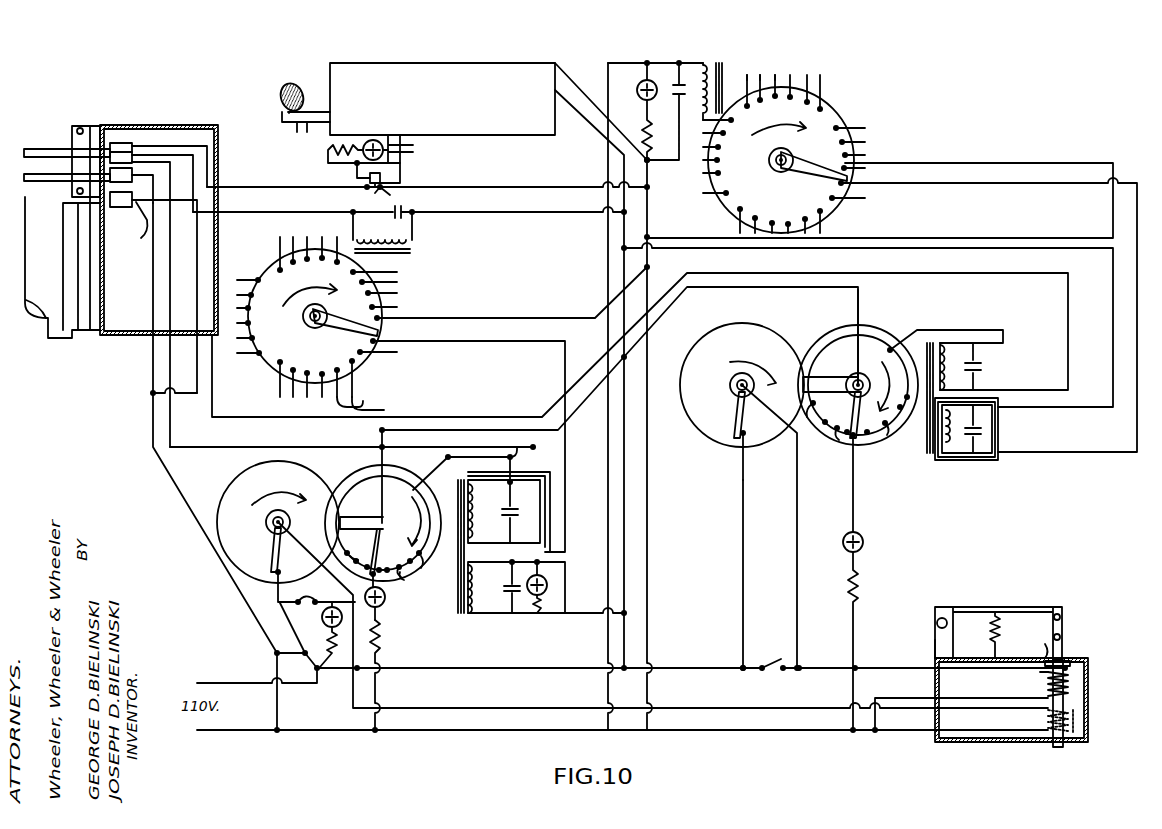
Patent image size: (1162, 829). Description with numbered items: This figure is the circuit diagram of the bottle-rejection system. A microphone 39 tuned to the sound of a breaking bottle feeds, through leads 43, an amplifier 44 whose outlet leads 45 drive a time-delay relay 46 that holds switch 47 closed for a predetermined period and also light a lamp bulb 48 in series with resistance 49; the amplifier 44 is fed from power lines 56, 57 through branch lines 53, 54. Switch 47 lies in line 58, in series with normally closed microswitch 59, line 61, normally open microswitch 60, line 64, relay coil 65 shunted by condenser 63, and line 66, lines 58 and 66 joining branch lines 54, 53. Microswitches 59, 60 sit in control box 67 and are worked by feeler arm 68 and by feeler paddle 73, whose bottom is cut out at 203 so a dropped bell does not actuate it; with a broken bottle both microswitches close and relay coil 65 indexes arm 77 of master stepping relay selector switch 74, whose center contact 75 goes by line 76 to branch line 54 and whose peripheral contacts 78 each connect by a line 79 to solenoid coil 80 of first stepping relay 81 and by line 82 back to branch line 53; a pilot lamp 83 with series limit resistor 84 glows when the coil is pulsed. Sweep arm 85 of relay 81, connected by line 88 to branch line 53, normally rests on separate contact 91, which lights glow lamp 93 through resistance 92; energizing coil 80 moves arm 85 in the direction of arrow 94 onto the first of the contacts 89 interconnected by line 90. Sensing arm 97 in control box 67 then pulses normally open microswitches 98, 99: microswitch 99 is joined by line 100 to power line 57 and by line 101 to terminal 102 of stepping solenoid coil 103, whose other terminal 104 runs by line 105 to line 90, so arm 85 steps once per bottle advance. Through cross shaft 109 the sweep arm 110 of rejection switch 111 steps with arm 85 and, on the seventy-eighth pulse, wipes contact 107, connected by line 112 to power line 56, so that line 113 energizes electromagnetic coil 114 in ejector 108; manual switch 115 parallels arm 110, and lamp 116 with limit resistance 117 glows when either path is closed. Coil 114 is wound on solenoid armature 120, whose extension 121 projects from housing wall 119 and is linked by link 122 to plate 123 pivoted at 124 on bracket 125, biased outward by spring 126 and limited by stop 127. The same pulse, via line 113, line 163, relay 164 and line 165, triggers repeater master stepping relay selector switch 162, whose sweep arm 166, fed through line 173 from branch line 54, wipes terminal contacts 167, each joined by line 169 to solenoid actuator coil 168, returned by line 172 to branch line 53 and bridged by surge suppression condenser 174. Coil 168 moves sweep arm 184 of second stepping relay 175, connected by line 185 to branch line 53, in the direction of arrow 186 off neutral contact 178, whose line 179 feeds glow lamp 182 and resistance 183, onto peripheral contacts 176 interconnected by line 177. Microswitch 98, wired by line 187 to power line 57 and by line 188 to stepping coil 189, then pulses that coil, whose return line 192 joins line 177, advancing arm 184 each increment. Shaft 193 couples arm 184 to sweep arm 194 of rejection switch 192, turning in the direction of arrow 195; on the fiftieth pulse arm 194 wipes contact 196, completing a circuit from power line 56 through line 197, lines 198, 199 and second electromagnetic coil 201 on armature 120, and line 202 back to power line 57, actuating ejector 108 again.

The microphone 39 is at (278, 90).
The leads 43 is at (306, 130).
The amplifier 44 is at (428, 70).
The outlet leads 45 is at (413, 145).
The relay 46 is at (355, 184).
The switch 47 is at (388, 192).
The lamp bulb 48 is at (375, 140).
The resistance 49 is at (339, 145).
The branch power line 53 is at (580, 110).
The branch power line 54 is at (570, 65).
The power line 56 is at (232, 680).
The power line 57 is at (252, 727).
The line 58 is at (555, 187).
The microswitch 59 is at (120, 183).
The microswitch 60 is at (124, 208).
The line 61 is at (140, 231).
The condenser 63 is at (415, 211).
The line 64 is at (277, 210).
The relay coil 65 is at (418, 232).
The line 66 is at (530, 213).
The control box 67 is at (180, 126).
The feeler arm 68 is at (38, 163).
The feeler paddle 73 is at (18, 240).
The master stepping relay selector switch 74 is at (366, 366).
The center contact 75 is at (326, 306).
The line 76 is at (444, 318).
The switch contact arm 77 is at (340, 326).
The contacts 78 is at (368, 352).
The line 79 is at (466, 341).
The solenoid coil 80 is at (476, 622).
The first stepping relay 81 is at (410, 582).
The line 82 is at (520, 618).
The pilot lamp 83 is at (550, 581).
The series limit resistor 84 is at (546, 599).
The sweep arm 85 is at (364, 555).
The line 88 is at (382, 470).
The contacts 89 is at (406, 566).
The line 90 is at (424, 564).
The contact 91 is at (385, 594).
The resistance 92 is at (380, 648).
The glow lamp 93 is at (375, 618).
The arrow 94 is at (383, 523).
The feeler arm 97 is at (61, 145).
The microswitch 98 is at (114, 140).
The microswitch 99 is at (124, 142).
The line 100 is at (152, 434).
The line 101 is at (228, 450).
The terminal 102 is at (536, 462).
The stepping solenoid coil 103 is at (486, 514).
The terminal 104 is at (530, 445).
The line 105 is at (446, 457).
The contact 107 is at (280, 574).
The ejector 108 is at (1082, 666).
The cross shaft 109 is at (350, 522).
The sweep arm 110 is at (274, 552).
The rejection switch 111 is at (223, 496).
The line 112 is at (278, 630).
The line 113 is at (310, 544).
The electromagnetic coil 114 is at (1068, 718).
The manual switch 115 is at (316, 606).
The lamp 116 is at (345, 620).
The limit resistance 117 is at (334, 648).
The housing wall 119 is at (1044, 654).
The solenoid armature 120 is at (1065, 685).
The extension 121 is at (1063, 644).
The link 122 is at (1062, 622).
The plate 123 is at (1022, 606).
The pivotal connection 124 is at (937, 624).
The bracket 125 is at (935, 646).
The spring 126 is at (997, 624).
The stop 127 is at (1068, 664).
The repeater master stepping relay selector switch 162 is at (838, 110).
The line 163 is at (607, 520).
The relay 164 is at (725, 50).
The line 165 is at (670, 155).
The sweep arm 166 is at (820, 172).
The terminal contacts 167 is at (848, 190).
The solenoid actuator coil 168 is at (938, 454).
The line 169 is at (803, 76).
The line 172 is at (1113, 348).
The line 173 is at (1066, 162).
The surge suppression condenser 174 is at (982, 436).
The second stepping relay 175 is at (822, 432).
The peripheral contacts 176 is at (838, 452).
The line 177 is at (890, 345).
The neutral contact 178 is at (856, 440).
The line 179 is at (856, 516).
The glow lamp 182 is at (864, 542).
The resistance 183 is at (862, 584).
The sweep arm 184 is at (844, 398).
The line 185 is at (856, 312).
The arrow 186 is at (858, 385).
The line 187 is at (187, 372).
The line 188 is at (252, 410).
The stepping coil 189 is at (950, 340).
The rejection switch 192 is at (725, 310).
The shaft 193 is at (844, 382).
The sweep arm 194 is at (732, 418).
The arrow 195 is at (742, 385).
The contact 196 is at (746, 436).
The line 197 is at (742, 581).
The line 198 is at (796, 528).
The line 199 is at (842, 662).
The second electromagnetic coil 201 is at (1046, 688).
The line 202 is at (990, 696).
The cut out 203 is at (37, 325).